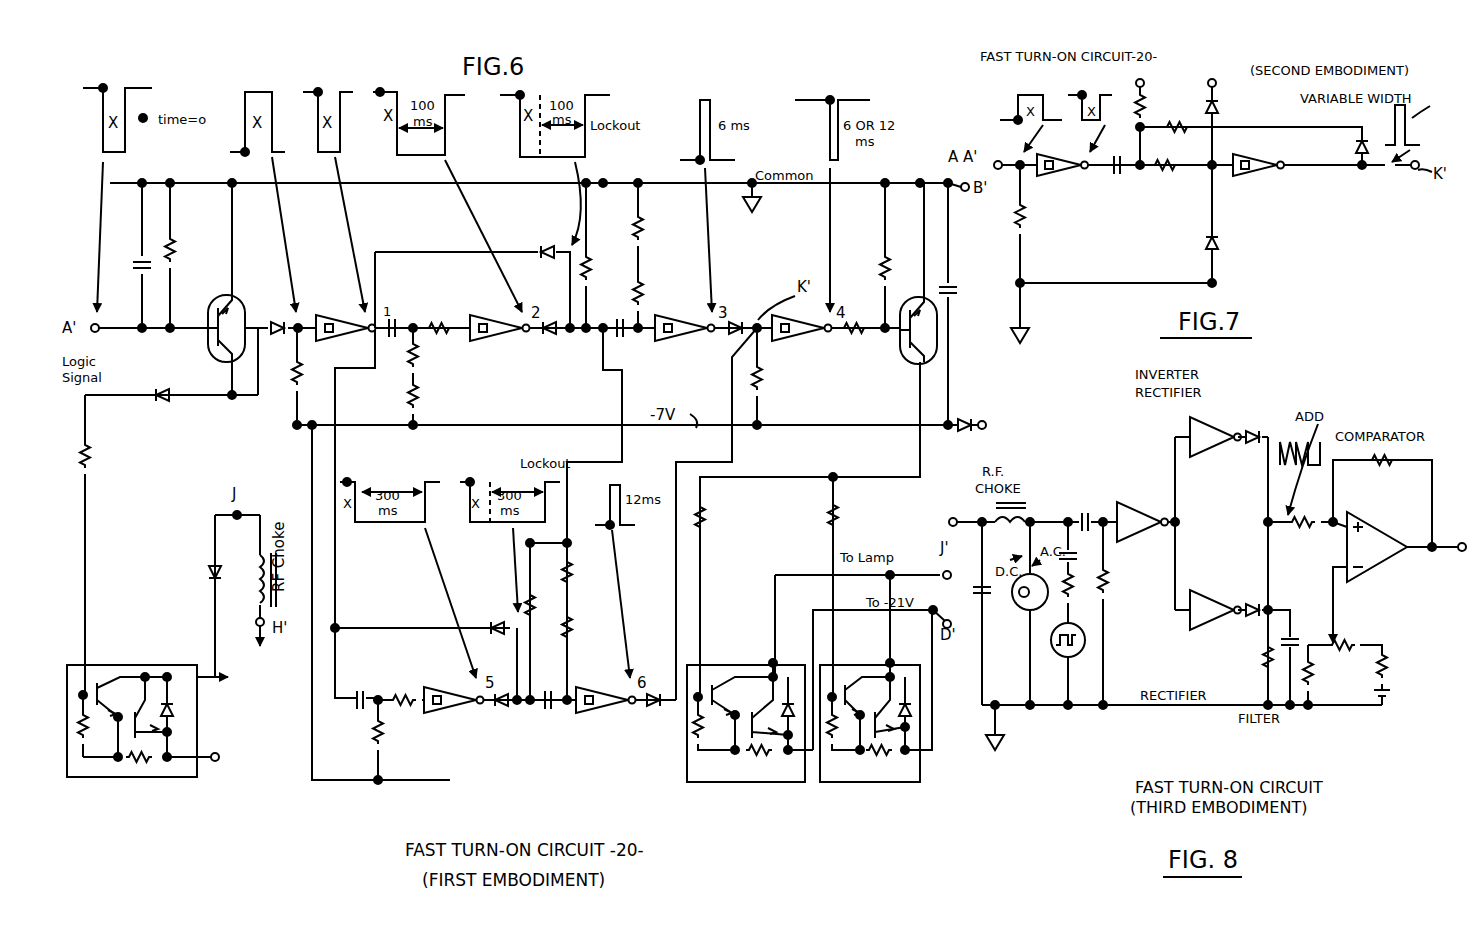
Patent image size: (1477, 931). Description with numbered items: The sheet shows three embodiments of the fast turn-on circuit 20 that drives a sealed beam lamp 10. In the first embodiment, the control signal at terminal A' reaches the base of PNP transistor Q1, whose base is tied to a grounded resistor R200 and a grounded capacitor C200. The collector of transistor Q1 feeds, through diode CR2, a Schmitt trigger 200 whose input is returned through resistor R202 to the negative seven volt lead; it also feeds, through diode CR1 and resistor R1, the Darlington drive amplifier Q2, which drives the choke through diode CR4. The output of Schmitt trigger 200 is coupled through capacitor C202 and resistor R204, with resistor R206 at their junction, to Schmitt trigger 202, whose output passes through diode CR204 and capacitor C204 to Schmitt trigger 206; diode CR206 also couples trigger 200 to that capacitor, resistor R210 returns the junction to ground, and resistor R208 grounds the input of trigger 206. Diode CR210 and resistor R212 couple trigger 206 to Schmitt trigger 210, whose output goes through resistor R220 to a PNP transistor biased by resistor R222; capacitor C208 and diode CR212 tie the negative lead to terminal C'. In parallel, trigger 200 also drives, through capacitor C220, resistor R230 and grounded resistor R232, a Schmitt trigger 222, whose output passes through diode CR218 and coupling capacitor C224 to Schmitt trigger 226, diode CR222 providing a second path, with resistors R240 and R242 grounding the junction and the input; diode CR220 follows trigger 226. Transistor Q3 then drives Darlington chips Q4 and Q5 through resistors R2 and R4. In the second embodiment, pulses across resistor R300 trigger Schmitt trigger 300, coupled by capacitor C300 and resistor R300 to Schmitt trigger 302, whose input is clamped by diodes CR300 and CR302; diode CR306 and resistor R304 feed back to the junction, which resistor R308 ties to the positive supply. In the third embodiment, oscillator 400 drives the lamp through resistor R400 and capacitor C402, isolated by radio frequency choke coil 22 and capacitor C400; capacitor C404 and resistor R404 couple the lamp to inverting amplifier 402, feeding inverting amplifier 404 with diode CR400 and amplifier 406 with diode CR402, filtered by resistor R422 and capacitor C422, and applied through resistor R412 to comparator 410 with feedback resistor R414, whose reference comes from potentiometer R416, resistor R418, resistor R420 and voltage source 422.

In FIG. 6, the resistor R200 is at (175, 256).
In FIG. 6, the capacitor C200 is at (152, 268).
In FIG. 6, the PNP transistor Q1 is at (206, 356).
In FIG. 6, the diode CR2 is at (276, 318).
In FIG. 6, the Schmitt trigger 200 is at (345, 314).
In FIG. 6, the capacitor C202 is at (392, 318).
In FIG. 6, the resistor R204 is at (438, 318).
In FIG. 6, the Schmitt trigger 202 is at (500, 340).
In FIG. 6, the diode CR204 is at (549, 336).
In FIG. 6, the resistor R202 is at (292, 380).
In FIG. 6, the resistor R206 is at (419, 400).
In FIG. 6, the diode CR206 is at (540, 250).
In FIG. 6, the resistor R210 is at (582, 262).
In FIG. 6, the resistor R208 is at (642, 232).
In FIG. 6, the capacitor C204 is at (612, 338).
In FIG. 6, the Schmitt trigger 206 is at (696, 340).
In FIG. 6, the diode CR210 is at (738, 320).
In FIG. 6, the Schmitt trigger 210 is at (808, 340).
In FIG. 6, the resistor R212 is at (762, 376).
In FIG. 6, the resistor R220 is at (870, 350).
In FIG. 6, the resistor R222 is at (884, 278).
In FIG. 6, the PNP transistor Q3 is at (906, 360).
In FIG. 6, the capacitor C208 is at (975, 280).
In FIG. 6, the diode CR212 is at (967, 418).
In FIG. 6, the diode CR1 is at (158, 402).
In FIG. 6, the resistor R1 is at (89, 452).
In FIG. 6, the diode CR4 is at (210, 578).
In FIG. 6, the Darlington amplifier integrated circuit chip Q2 is at (160, 664).
In FIG. 6, the lamp 10 is at (258, 682).
In FIG. 8, the lamp 10 is at (1020, 604).
In FIG. 6, the resistor R2 is at (704, 520).
In FIG. 6, the resistor R4 is at (838, 520).
In FIG. 6, the resistor R240 is at (526, 598).
In FIG. 6, the resistor R242 is at (569, 586).
In FIG. 6, the diode CR222 is at (490, 630).
In FIG. 6, the capacitor C220 is at (360, 688).
In FIG. 6, the resistor R230 is at (410, 712).
In FIG. 6, the Schmitt trigger 222 is at (470, 714).
In FIG. 6, the diode CR218 is at (500, 712).
In FIG. 6, the coupling capacitor C224 is at (550, 712).
In FIG. 6, the Schmitt trigger 226 is at (610, 714).
In FIG. 6, the diode CR220 is at (658, 715).
In FIG. 6, the resistor R232 is at (372, 768).
In FIG. 6, the Darlington amplifier chip Q4 is at (770, 782).
In FIG. 6, the Darlington amplifier chip Q5 is at (905, 782).
In FIG. 6, the fast turn-on circuit 20 is at (777, 850).
In FIG. 7, the fast turn-on circuit 20 is at (1183, 56).
In FIG. 7, the Schmitt trigger circuit 300 is at (1056, 178).
In FIG. 7, the capacitor C300 is at (1117, 176).
In FIG. 7, the resistor R300 is at (1026, 222).
In FIG. 7, the Schmitt trigger 302 is at (1251, 178).
In FIG. 7, the resistor R308 is at (1135, 104).
In FIG. 7, the resistor R304 is at (1170, 114).
In FIG. 7, the diode CR300 is at (1220, 108).
In FIG. 7, the diode CR302 is at (1220, 246).
In FIG. 7, the diode CR306 is at (1356, 148).
In FIG. 8, the radio frequency choke coil 22 is at (1030, 517).
In FIG. 8, the coupling capacitor C404 is at (1085, 514).
In FIG. 8, the capacitor C400 is at (975, 593).
In FIG. 8, the capacitor C402 is at (1034, 526).
In FIG. 8, the resistor R400 is at (1074, 590).
In FIG. 8, the resistor R404 is at (1107, 578).
In FIG. 8, the high frequency square-wave oscillator 400 is at (1086, 640).
In FIG. 8, the inverting amplifier 402 is at (1137, 540).
In FIG. 8, the inverting amplifier 404 is at (1213, 428).
In FIG. 8, the rectifying diode CR400 is at (1252, 445).
In FIG. 8, the amplifier 406 is at (1228, 594).
In FIG. 8, the diode CR402 is at (1256, 620).
In FIG. 8, the resistor R422 is at (1264, 664).
In FIG. 8, the capacitor C422 is at (1300, 636).
In FIG. 8, the resistor R412 is at (1312, 528).
In FIG. 8, the resistor R414 is at (1396, 466).
In FIG. 8, the comparator 410 is at (1360, 578).
In FIG. 8, the potentiometer R416 is at (1342, 644).
In FIG. 8, the resistor R418 is at (1312, 698).
In FIG. 8, the resistor R420 is at (1388, 678).
In FIG. 8, the voltage source 422 is at (1391, 692).